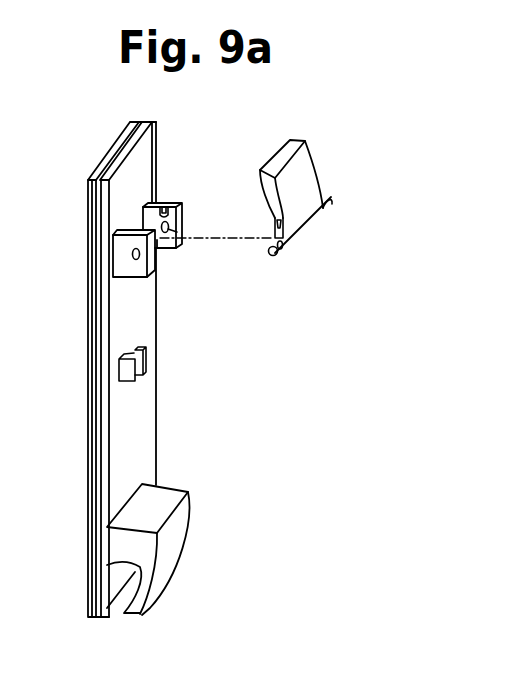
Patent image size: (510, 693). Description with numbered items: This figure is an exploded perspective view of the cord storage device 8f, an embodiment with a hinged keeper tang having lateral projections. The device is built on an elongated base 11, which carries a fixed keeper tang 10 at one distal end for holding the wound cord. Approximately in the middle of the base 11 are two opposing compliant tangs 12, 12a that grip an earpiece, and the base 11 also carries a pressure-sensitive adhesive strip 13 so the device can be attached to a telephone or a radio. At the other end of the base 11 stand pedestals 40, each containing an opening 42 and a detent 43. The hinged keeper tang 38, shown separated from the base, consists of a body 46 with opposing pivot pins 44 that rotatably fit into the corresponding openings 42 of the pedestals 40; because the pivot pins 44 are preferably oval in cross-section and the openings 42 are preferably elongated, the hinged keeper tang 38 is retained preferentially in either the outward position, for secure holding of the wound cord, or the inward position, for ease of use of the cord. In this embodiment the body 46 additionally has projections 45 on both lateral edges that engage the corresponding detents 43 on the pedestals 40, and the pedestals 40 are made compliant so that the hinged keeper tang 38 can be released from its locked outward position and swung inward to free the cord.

The cord storage device 8f is at (230, 494).
The keeper tang 10 is at (168, 551).
The elongated base 11 is at (142, 453).
The compliant tang 12 is at (125, 373).
The compliant tang 12a is at (149, 362).
The pressure-sensitive adhesive strip 13 is at (86, 616).
The hinged keeper tang 38 is at (322, 149).
The pedestal 40 is at (127, 263).
The opening 42 is at (132, 254).
The detent 43 is at (140, 230).
The pivot pin 44 is at (331, 199).
The projection 45 is at (285, 226).
The body 46 is at (303, 206).